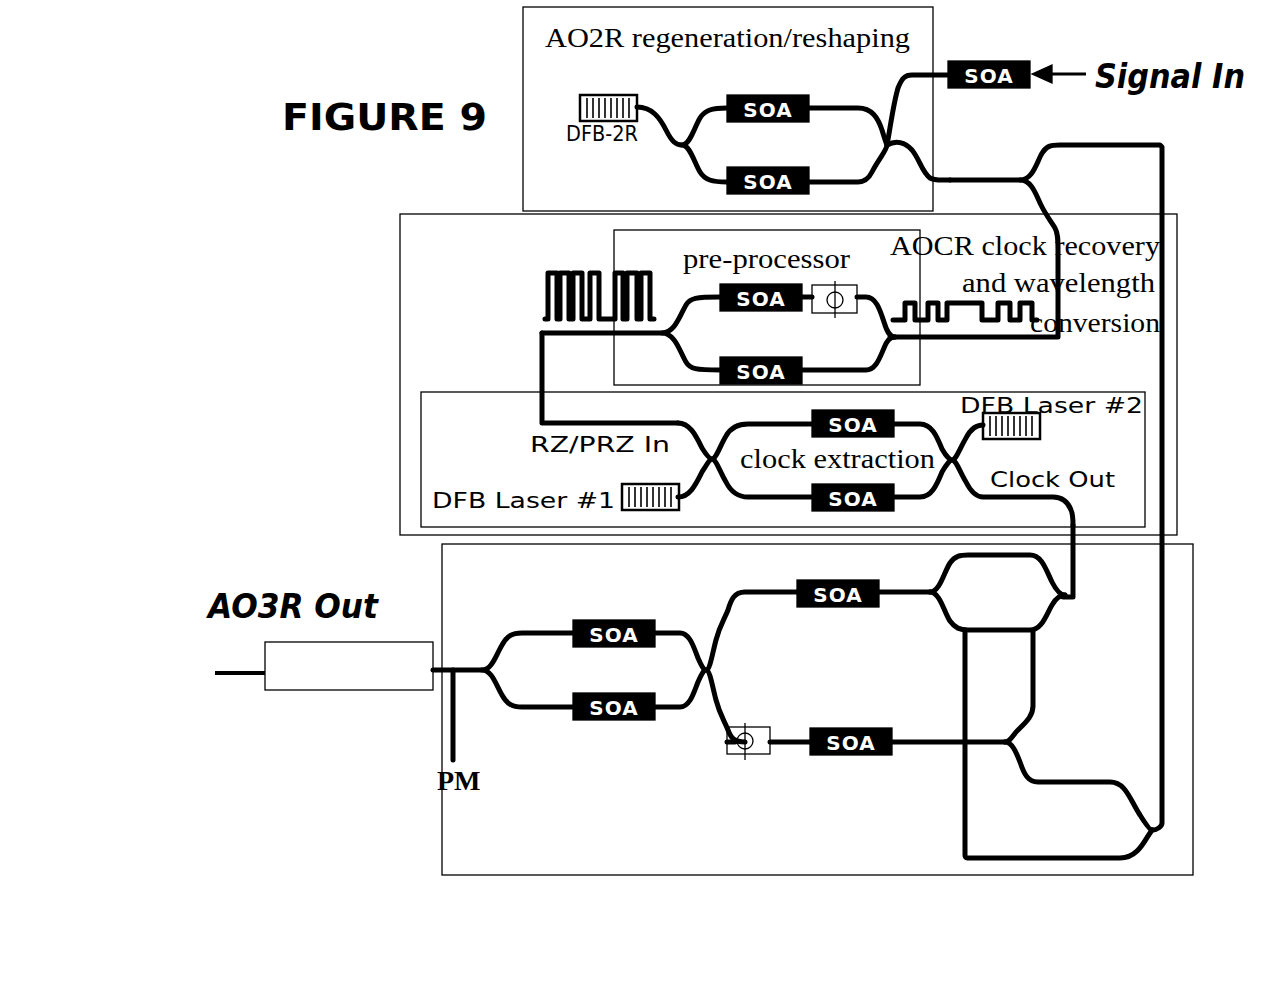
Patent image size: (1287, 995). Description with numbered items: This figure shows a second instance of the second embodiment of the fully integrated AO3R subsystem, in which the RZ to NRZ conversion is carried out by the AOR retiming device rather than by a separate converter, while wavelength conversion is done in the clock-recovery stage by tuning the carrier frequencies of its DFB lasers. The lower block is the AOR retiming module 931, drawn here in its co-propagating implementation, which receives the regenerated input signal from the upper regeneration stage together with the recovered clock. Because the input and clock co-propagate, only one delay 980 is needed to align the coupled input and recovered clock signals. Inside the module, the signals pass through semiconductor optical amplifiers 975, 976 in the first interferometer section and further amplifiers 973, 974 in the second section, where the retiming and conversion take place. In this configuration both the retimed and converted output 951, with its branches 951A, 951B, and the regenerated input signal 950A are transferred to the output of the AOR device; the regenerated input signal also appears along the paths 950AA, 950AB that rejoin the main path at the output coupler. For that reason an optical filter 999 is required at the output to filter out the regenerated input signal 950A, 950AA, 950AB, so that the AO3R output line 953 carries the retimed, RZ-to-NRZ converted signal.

The AOR retiming module 931 is at (1197, 618).
The regenerated input signal 950A is at (1060, 142).
The regenerated input signal branch 950AA is at (1110, 781).
The regenerated input signal branch 950AB is at (952, 628).
The retimed and converted output 951 is at (1031, 577).
The retimed and converted output branch 951A is at (992, 558).
The retimed and converted output branch 951B is at (1022, 720).
The output line 953 is at (245, 677).
The semiconductor optical amplifier 973 is at (829, 608).
The semiconductor optical amplifier 974 is at (850, 728).
The semiconductor optical amplifier 975 is at (613, 648).
The semiconductor optical amplifier 976 is at (613, 720).
The delay 980 is at (757, 727).
The optical filter 999 is at (337, 697).